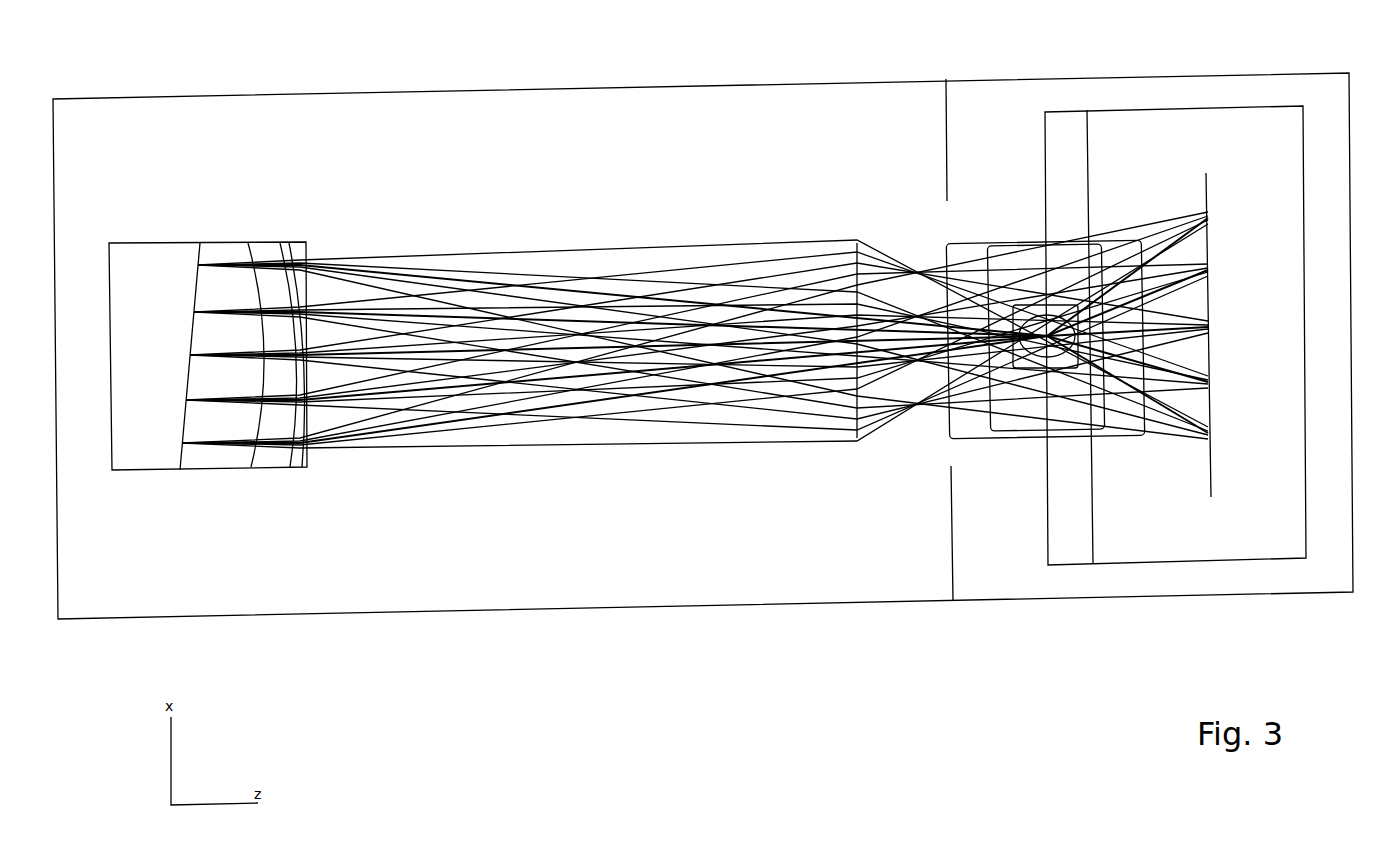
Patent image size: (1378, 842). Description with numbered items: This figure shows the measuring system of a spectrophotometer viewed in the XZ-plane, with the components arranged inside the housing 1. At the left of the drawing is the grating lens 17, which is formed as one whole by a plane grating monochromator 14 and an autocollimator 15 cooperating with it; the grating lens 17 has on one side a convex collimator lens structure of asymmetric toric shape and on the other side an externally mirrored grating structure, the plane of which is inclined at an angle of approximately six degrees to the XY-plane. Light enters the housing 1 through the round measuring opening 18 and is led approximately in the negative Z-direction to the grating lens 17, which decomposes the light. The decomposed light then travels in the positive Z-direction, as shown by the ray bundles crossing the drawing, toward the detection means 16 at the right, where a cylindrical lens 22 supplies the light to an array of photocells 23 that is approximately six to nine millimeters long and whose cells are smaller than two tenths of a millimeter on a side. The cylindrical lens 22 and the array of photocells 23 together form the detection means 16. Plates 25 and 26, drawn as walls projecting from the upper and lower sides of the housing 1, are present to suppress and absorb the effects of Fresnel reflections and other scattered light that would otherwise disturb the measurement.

The housing 1 is at (535, 608).
The plane grating monochromator 14 is at (197, 289).
The autocollimator 15 is at (272, 283).
The detection means 16 is at (1211, 106).
The grating lens 17 is at (228, 387).
The measuring opening 18 is at (1060, 345).
The cylindrical lens 22 is at (1088, 167).
The array of photocells 23 is at (1213, 475).
The plate 25 is at (947, 115).
The plate 26 is at (951, 558).